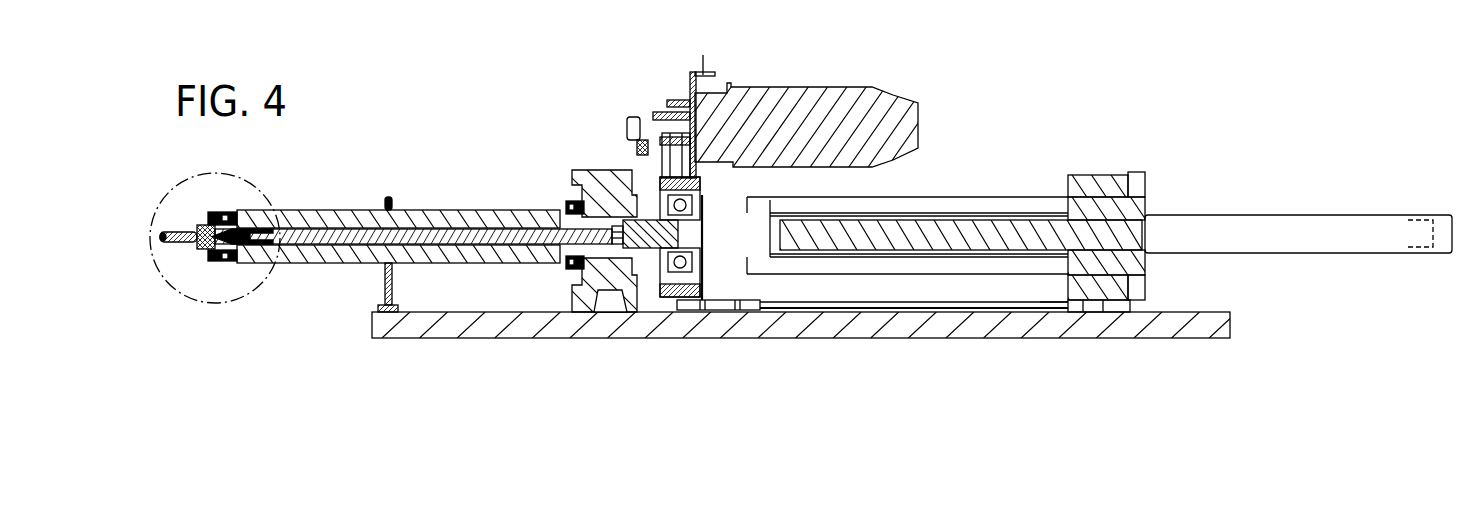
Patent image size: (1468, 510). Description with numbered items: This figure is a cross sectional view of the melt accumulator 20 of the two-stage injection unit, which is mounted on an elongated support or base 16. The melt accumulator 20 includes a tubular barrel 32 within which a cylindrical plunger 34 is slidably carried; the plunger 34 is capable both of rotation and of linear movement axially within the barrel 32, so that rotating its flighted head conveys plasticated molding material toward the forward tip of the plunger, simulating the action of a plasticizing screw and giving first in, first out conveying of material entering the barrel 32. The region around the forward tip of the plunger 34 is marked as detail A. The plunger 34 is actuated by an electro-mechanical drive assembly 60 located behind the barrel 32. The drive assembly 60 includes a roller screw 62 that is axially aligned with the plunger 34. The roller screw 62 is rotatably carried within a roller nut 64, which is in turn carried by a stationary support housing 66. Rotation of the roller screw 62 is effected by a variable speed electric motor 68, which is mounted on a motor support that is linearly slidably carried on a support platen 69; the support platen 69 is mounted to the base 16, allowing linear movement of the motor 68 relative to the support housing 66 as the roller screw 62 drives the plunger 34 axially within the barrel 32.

The base 16 is at (1222, 313).
The melt accumulator 20 is at (418, 166).
The tubular barrel 32 is at (354, 264).
The cylindrical plunger 34 is at (440, 230).
The electro-mechanical drive assembly 60 is at (597, 119).
The roller screw 62 is at (920, 232).
The roller nut 64 is at (1130, 210).
The support housing 66 is at (1098, 180).
The variable speed electric motor 68 is at (880, 102).
The support platen 69 is at (722, 292).
The detail area A is at (270, 181).